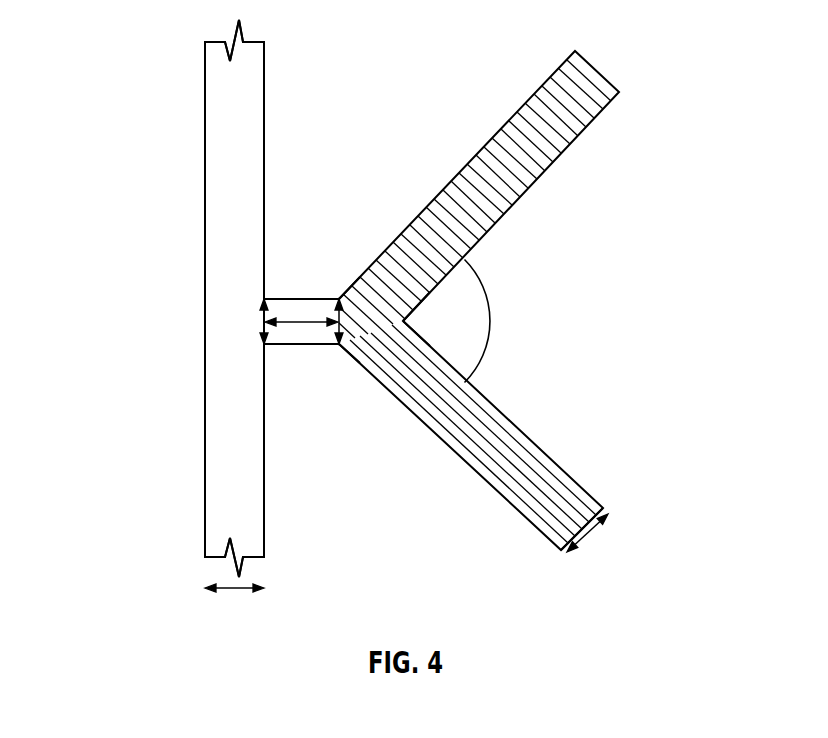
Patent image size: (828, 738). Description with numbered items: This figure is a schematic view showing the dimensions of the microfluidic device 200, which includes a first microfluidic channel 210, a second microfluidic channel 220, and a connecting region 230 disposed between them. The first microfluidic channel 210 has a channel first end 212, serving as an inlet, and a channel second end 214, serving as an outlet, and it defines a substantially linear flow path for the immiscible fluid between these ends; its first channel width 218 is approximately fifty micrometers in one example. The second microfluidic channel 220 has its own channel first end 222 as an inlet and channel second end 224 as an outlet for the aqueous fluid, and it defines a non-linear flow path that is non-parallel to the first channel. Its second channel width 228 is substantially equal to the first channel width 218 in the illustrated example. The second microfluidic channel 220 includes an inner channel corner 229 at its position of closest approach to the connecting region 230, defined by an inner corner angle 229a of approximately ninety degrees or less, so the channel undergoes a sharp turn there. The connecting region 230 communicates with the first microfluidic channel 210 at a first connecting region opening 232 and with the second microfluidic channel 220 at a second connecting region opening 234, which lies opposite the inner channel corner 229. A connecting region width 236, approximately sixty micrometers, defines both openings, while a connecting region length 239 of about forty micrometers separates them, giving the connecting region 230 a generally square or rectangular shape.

The microfluidic device 200 is at (130, 28).
The first microfluidic channel 210 is at (205, 447).
The channel first end 212 is at (264, 535).
The channel second end 214 is at (264, 50).
The first channel width 218 is at (235, 590).
The second microfluidic channel 220 is at (497, 490).
The channel first end 222 is at (580, 482).
The channel second end 224 is at (602, 108).
The second channel width 228 is at (588, 534).
The inner channel corner 229 is at (407, 317).
The inner corner angle 229a is at (492, 322).
The connecting region 230 is at (309, 298).
The first connecting region opening 232 is at (252, 318).
The second connecting region opening 234 is at (360, 320).
The connecting region width 236 is at (257, 328).
The connecting region length 239 is at (313, 324).